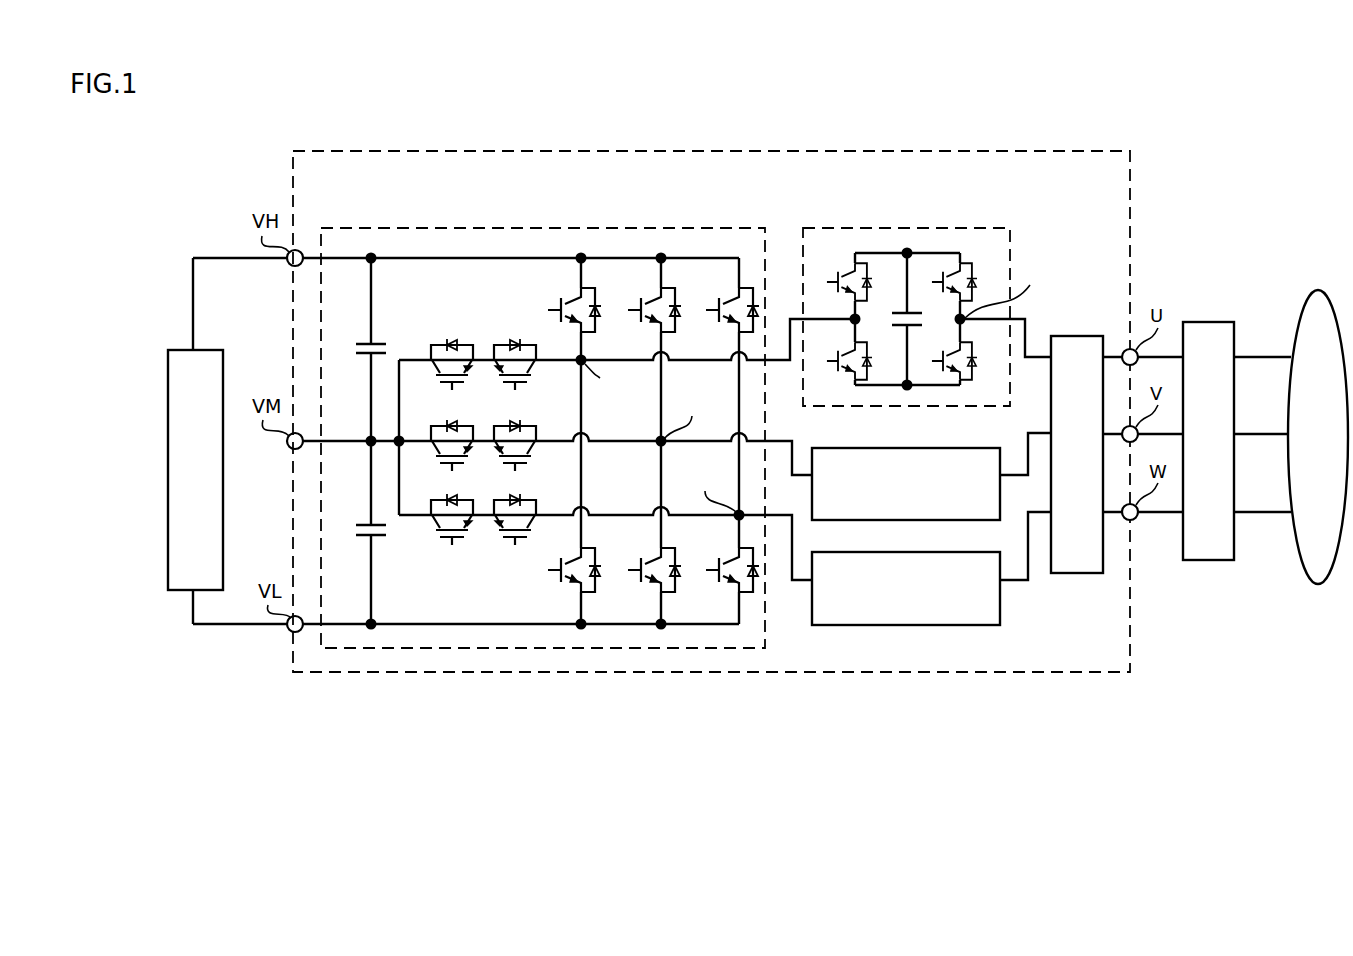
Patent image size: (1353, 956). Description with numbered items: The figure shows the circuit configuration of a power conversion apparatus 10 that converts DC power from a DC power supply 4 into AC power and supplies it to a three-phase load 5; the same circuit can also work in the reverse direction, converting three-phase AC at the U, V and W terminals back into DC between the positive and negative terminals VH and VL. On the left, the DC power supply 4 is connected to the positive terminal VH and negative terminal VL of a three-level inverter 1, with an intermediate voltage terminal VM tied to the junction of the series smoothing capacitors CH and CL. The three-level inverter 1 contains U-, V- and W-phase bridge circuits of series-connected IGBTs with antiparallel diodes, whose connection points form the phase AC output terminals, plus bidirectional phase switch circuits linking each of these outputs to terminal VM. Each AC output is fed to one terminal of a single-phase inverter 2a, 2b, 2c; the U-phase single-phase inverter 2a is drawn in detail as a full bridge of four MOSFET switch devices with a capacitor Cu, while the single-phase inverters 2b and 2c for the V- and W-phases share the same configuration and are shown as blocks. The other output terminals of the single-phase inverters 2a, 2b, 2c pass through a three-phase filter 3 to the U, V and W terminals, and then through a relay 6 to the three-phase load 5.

The power conversion apparatus 10 is at (711, 151).
The three-level inverter 1 is at (553, 228).
The single-phase inverter 2a is at (905, 228).
The single-phase inverter 2b is at (895, 448).
The single-phase inverter 2c is at (905, 625).
The three-phase filter 3 is at (1090, 336).
The DC power supply 4 is at (210, 350).
The three-phase load 5 is at (1336, 305).
The relay 6 is at (1210, 322).